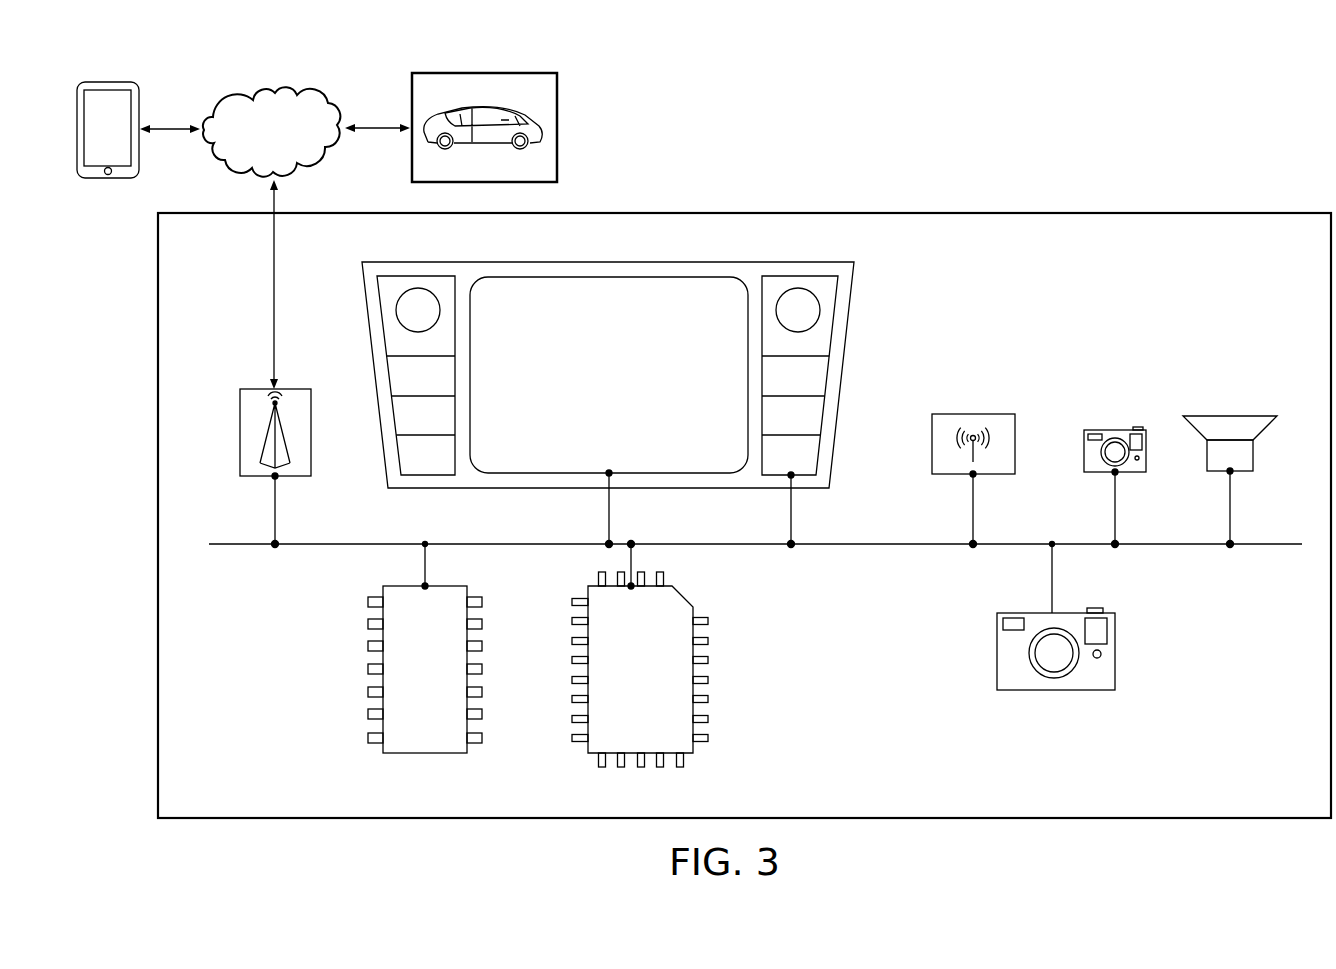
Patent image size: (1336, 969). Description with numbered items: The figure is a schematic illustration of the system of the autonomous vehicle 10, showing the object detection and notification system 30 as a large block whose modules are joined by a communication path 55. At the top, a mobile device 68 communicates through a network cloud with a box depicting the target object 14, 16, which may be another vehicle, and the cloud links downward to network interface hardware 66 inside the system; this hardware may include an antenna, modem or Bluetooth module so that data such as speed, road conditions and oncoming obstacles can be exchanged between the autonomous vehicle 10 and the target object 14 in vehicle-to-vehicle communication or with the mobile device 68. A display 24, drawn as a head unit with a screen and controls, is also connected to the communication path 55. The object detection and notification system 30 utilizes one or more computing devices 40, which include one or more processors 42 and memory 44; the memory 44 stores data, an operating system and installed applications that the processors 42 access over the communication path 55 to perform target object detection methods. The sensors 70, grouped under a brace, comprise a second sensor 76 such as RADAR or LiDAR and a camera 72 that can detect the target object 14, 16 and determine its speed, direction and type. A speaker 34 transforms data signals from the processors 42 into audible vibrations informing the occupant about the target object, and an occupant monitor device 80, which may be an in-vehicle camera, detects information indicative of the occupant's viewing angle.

The autonomous vehicle 10 is at (1015, 146).
The target object 14 is at (537, 127).
The target object 16 is at (557, 128).
The display 24 is at (595, 285).
The object detection and notification system 30 is at (1201, 208).
The speaker 34 is at (1228, 416).
The computing device 40 is at (178, 640).
The processor 42 is at (591, 757).
The memory 44 is at (421, 757).
The communication path 55 is at (330, 548).
The network interface hardware 66 is at (240, 397).
The mobile device 68 is at (140, 94).
The sensors 70 is at (1156, 357).
The camera 72 is at (1115, 430).
The second sensor 76 is at (965, 414).
The occupant monitor device 80 is at (1055, 692).